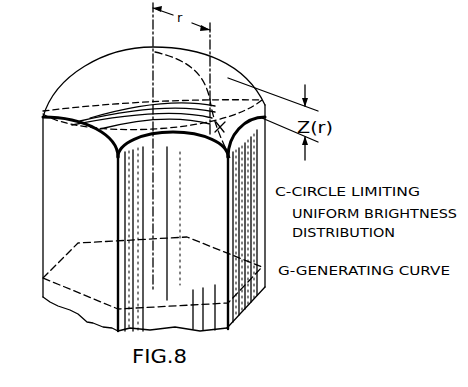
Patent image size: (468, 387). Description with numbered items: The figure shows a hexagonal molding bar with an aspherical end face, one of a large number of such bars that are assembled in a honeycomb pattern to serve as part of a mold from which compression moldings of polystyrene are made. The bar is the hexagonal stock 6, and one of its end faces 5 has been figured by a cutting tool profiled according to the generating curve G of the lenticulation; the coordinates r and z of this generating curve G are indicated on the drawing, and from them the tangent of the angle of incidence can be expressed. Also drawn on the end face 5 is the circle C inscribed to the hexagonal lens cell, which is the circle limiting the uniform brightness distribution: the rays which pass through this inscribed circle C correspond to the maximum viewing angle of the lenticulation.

The end face 5 is at (108, 68).
The hexagonal stock 6 is at (58, 173).
The circle limiting uniform brightness distribution C is at (45, 111).
The generating curve G is at (197, 70).